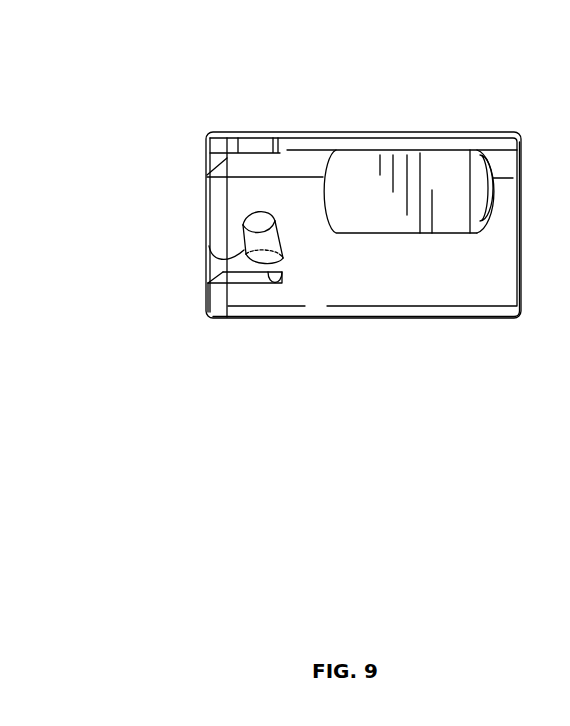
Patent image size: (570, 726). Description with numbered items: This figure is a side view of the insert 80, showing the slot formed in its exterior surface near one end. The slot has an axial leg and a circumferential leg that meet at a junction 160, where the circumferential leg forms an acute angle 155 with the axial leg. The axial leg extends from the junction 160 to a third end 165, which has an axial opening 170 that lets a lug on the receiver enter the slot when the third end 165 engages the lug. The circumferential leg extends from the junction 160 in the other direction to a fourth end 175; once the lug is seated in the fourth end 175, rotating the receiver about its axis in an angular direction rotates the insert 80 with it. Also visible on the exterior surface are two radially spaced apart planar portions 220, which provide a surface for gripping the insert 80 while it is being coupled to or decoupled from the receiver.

The insert 80 is at (390, 364).
The acute angle 155 is at (228, 241).
The junction 160 is at (295, 300).
The third end 165 is at (219, 303).
The axial opening 170 is at (194, 260).
The fourth end 175 is at (274, 196).
The planar portions 220 is at (418, 153).